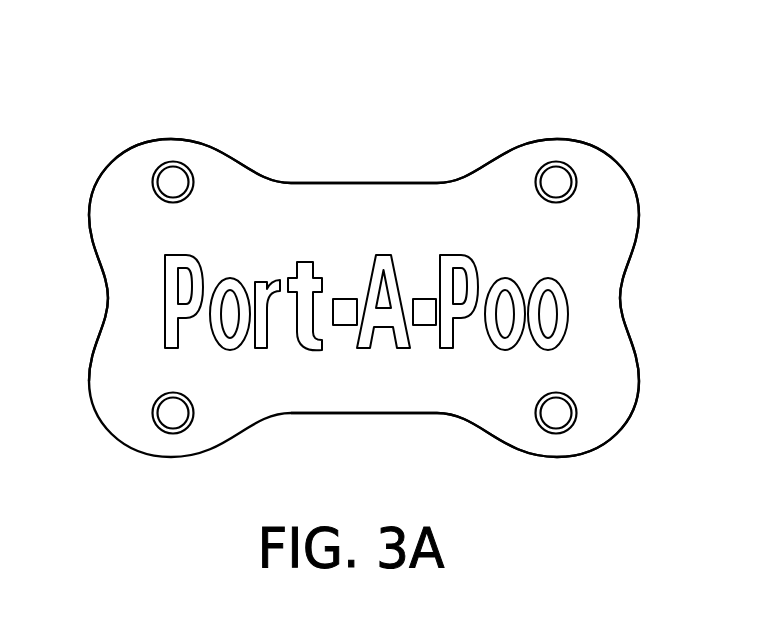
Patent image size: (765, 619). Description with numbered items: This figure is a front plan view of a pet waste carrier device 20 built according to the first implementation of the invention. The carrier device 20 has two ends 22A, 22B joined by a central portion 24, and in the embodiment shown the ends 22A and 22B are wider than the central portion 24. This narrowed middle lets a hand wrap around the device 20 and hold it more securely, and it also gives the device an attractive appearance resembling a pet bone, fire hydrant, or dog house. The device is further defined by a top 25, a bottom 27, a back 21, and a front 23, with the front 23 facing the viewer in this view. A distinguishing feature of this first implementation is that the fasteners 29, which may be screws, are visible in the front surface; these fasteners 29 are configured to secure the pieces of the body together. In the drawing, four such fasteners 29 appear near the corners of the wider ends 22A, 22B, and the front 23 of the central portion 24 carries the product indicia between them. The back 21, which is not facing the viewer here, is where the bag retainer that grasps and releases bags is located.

The pet waste carrier device 20 is at (429, 85).
The back 21 is at (100, 178).
The end 22A is at (617, 213).
The end 22B is at (118, 223).
The front 23 is at (275, 205).
The central portion 24 is at (337, 183).
The top 25 is at (512, 152).
The bottom 27 is at (543, 445).
The fasteners 29 is at (173, 183).